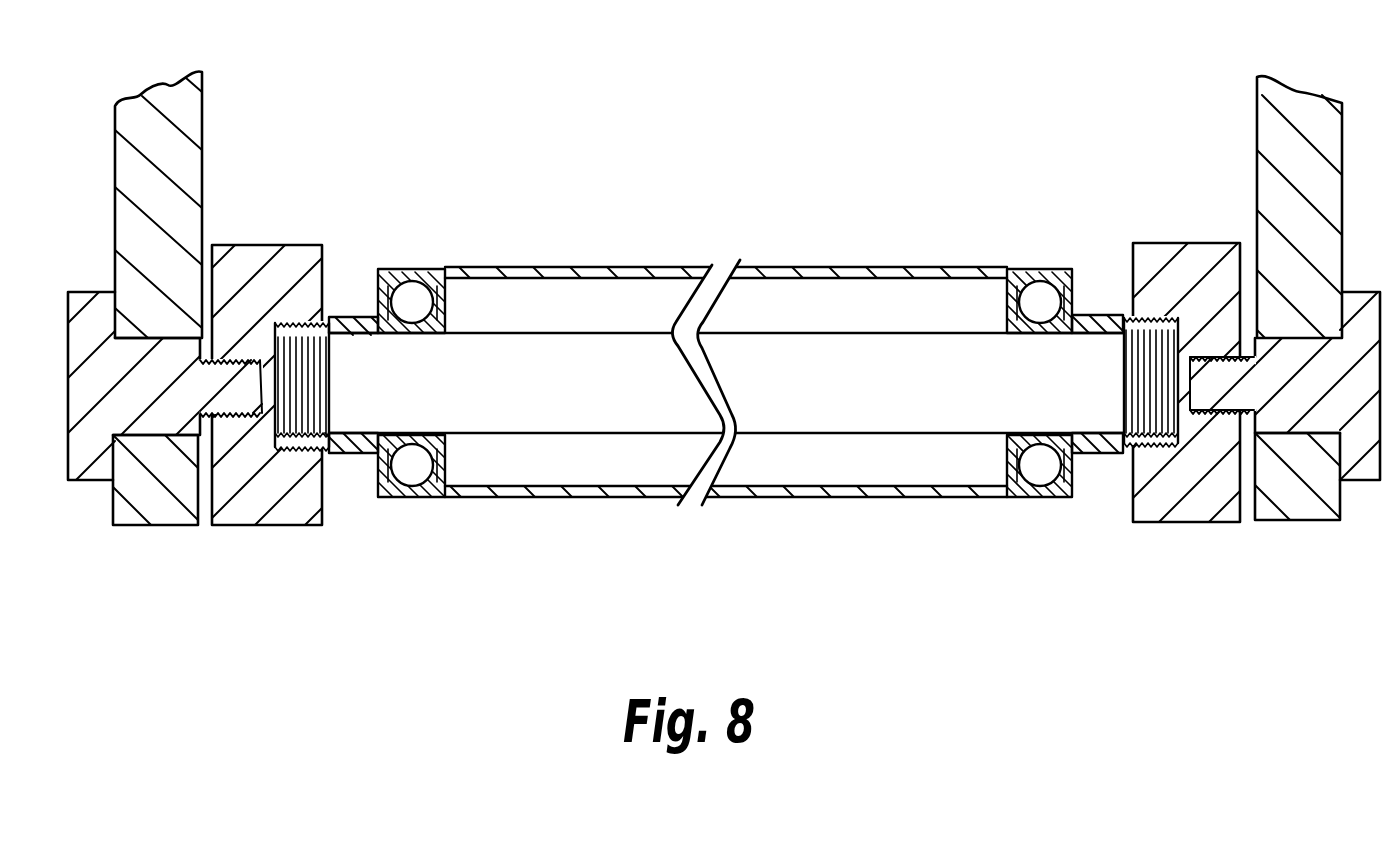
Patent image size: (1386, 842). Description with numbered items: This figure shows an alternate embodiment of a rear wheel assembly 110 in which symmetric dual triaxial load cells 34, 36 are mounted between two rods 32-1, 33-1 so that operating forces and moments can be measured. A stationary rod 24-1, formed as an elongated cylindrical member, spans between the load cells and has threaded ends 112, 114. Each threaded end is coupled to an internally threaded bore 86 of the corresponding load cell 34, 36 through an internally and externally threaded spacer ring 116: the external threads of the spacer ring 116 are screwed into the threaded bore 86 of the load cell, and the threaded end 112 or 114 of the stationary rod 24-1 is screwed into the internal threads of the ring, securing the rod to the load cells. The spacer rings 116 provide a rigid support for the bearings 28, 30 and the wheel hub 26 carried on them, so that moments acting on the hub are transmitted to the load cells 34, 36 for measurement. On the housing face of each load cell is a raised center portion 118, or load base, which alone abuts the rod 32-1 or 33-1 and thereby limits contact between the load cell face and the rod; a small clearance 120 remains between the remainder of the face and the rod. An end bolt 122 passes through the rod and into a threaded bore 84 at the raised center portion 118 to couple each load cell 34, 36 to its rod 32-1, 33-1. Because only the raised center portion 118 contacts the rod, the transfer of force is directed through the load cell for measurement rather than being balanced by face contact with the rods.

The rod 32-1 is at (206, 84).
The rod 33-1 is at (1257, 121).
The load cell 34 is at (274, 241).
The load cell 36 is at (1165, 242).
The raised center portion 118 is at (205, 343).
The clearance gap 120 is at (1243, 258).
The end bolt 122 is at (92, 480).
The spacer ring 116 is at (345, 317).
The bearing 28 is at (413, 270).
The bearing 30 is at (1040, 290).
The wheel hub 26 is at (977, 279).
The stationary rod 24-1 is at (863, 367).
The rear wheel assembly 110 is at (793, 252).
The threaded end 112 is at (313, 427).
The threaded end 114 is at (1150, 428).
The threaded bore 84 is at (256, 403).
The internally threaded bore 86 is at (303, 445).